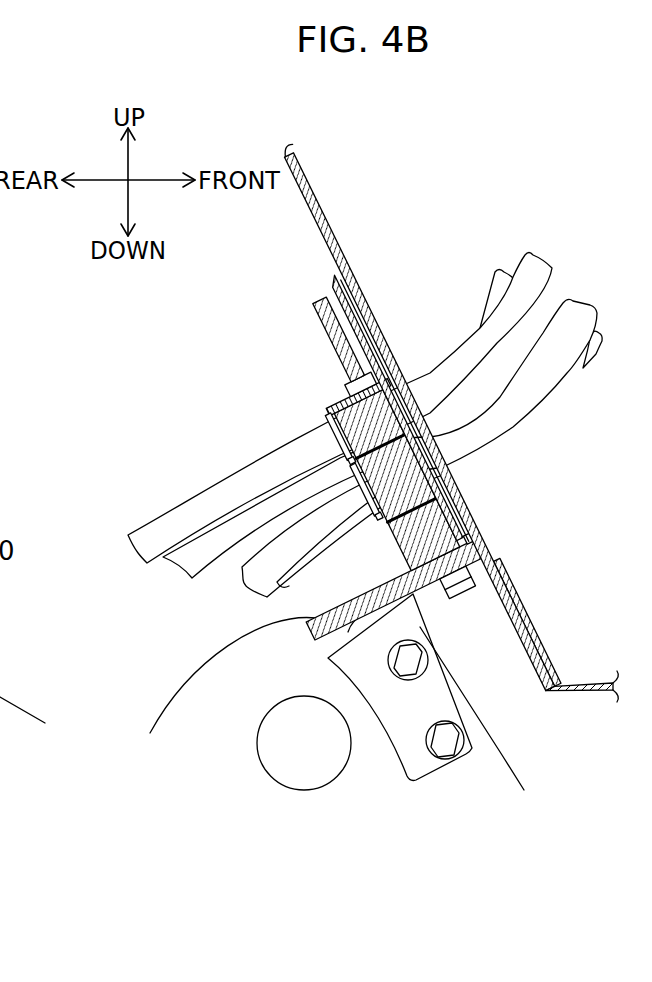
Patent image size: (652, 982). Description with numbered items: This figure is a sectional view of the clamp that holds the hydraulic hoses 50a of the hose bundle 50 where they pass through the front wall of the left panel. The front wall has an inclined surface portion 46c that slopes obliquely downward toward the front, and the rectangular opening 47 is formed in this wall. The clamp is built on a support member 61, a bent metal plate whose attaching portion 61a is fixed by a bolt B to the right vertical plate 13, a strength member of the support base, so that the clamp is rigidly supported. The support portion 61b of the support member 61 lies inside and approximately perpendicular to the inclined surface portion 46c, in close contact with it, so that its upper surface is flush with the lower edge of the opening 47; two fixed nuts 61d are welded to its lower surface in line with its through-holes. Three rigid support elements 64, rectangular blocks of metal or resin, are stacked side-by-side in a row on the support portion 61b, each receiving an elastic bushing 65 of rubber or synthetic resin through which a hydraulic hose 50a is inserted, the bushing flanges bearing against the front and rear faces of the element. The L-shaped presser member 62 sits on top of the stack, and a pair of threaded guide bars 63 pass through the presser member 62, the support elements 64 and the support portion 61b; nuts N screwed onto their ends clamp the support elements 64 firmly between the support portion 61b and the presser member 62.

The inclined surface portion 46c is at (305, 172).
The opening 47 is at (365, 300).
The presser member 62 is at (369, 322).
The guide bars 63 is at (318, 319).
The nuts N is at (344, 396).
The bushing 65 is at (332, 415).
The support elements 64 is at (439, 520).
The hose bundle 50 is at (311, 411).
The hydraulic hose 50a is at (583, 403).
The support member 61 is at (391, 673).
The attaching portion 61a is at (412, 743).
The support portion 61b is at (346, 634).
The fixed nuts 61d is at (479, 573).
The bolt B is at (445, 740).
The vertical plate 13 is at (510, 775).